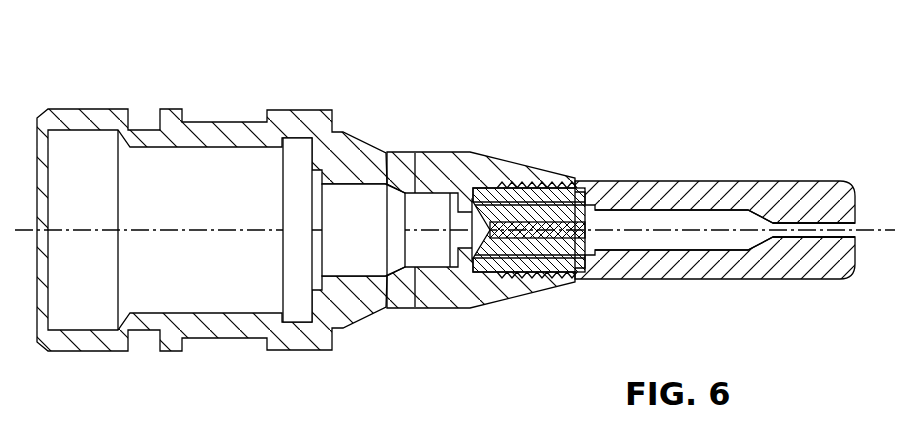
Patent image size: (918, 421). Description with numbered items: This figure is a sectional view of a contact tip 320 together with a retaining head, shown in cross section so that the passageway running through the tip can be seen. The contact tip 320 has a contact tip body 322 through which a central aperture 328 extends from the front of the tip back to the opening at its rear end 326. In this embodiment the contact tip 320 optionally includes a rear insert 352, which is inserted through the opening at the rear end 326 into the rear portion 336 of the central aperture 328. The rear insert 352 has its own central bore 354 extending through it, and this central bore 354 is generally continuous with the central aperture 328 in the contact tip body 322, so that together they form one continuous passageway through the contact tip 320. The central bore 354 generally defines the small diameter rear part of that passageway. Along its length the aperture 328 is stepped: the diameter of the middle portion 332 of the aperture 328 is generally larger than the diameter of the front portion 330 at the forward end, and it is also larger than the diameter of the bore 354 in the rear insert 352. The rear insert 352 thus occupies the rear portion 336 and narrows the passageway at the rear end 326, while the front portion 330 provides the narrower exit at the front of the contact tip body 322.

The contact tip 320 is at (767, 110).
The contact tip body 322 is at (797, 281).
The rear end 326 is at (467, 258).
The central aperture 328 is at (658, 242).
The front portion 330 is at (827, 222).
The middle portion 332 is at (712, 218).
The rear portion 336 is at (505, 262).
The rear insert 352 is at (519, 184).
The central bore 354 is at (577, 273).